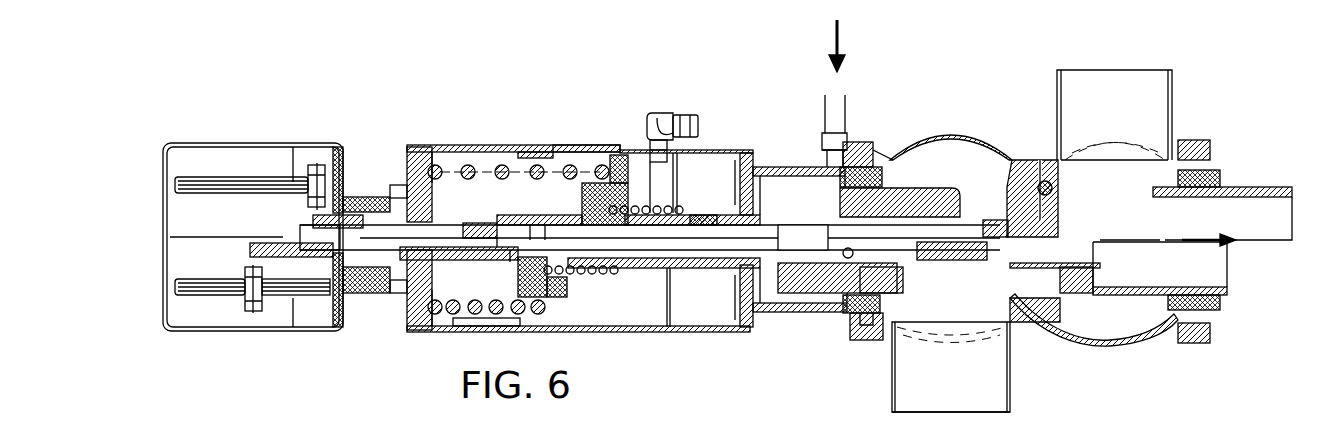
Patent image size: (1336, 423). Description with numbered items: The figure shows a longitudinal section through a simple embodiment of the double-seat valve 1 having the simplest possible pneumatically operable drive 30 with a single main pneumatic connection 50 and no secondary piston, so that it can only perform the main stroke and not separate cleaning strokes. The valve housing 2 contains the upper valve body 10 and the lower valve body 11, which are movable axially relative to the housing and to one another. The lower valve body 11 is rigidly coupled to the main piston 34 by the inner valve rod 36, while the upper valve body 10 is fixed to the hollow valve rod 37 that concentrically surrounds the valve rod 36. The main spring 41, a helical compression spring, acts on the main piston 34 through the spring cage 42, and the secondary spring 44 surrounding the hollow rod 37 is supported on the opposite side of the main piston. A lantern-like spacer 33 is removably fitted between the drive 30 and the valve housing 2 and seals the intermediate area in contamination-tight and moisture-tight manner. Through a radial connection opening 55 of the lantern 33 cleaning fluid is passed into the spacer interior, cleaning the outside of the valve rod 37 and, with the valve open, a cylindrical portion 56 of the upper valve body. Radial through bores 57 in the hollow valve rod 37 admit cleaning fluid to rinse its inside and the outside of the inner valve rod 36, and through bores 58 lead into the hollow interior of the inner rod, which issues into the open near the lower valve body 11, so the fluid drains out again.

The double-seat valve 1 is at (1110, 358).
The valve housing 2 is at (1000, 150).
The upper valve body 10 is at (933, 190).
The lower valve body 11 is at (1060, 200).
The pneumatically operable drive 30 is at (510, 100).
The lantern-like spacer 33 is at (782, 145).
The main piston 34 is at (613, 153).
The valve rod 36 is at (732, 150).
The hollow valve rod 37 is at (650, 270).
The main spring 41 is at (465, 158).
The spring cage 42 is at (553, 157).
The secondary spring 44 is at (605, 274).
The main pneumatic connection 50 is at (672, 100).
The radial connection opening 55 is at (867, 142).
The cylindrical portion of the upper valve body 56 is at (832, 330).
The radial through bores 57 is at (824, 203).
The through bores 58 is at (850, 330).